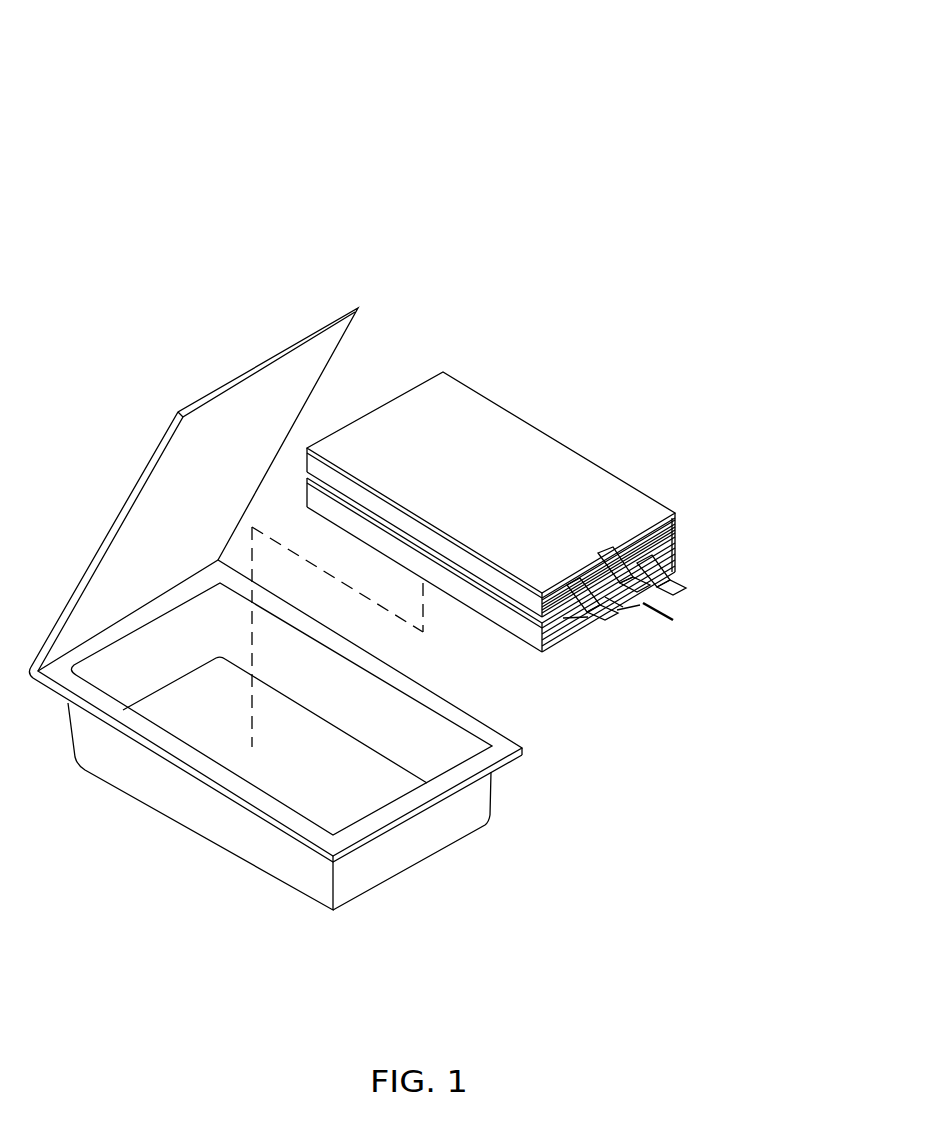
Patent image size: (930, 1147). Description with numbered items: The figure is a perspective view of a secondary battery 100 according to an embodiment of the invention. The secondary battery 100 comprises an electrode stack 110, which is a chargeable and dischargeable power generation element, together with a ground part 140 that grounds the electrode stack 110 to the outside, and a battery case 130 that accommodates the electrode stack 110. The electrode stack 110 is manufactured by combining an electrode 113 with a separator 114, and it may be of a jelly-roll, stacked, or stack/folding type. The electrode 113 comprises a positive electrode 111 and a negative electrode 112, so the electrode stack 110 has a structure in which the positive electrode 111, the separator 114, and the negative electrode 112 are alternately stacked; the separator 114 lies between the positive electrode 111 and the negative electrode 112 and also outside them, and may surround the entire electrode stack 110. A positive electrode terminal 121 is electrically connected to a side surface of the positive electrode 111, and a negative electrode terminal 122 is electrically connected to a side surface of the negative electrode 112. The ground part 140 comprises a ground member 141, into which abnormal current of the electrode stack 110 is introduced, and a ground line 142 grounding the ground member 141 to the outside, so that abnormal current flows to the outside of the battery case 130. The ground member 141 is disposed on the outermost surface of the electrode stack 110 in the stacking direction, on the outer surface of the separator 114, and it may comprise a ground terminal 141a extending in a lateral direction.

The secondary battery 100 is at (423, 534).
The electrode stack 110 is at (675, 513).
The positive electrode 111 is at (673, 528).
The negative electrode 112 is at (673, 537).
The electrode 113 is at (679, 557).
The separator 114 is at (676, 520).
The positive electrode terminal 121 is at (614, 614).
The negative electrode terminal 122 is at (688, 590).
The battery case 130 is at (340, 347).
The ground part 140 is at (470, 388).
The ground member 141 is at (558, 450).
The ground terminal 141a is at (610, 556).
The ground line 142 is at (677, 613).